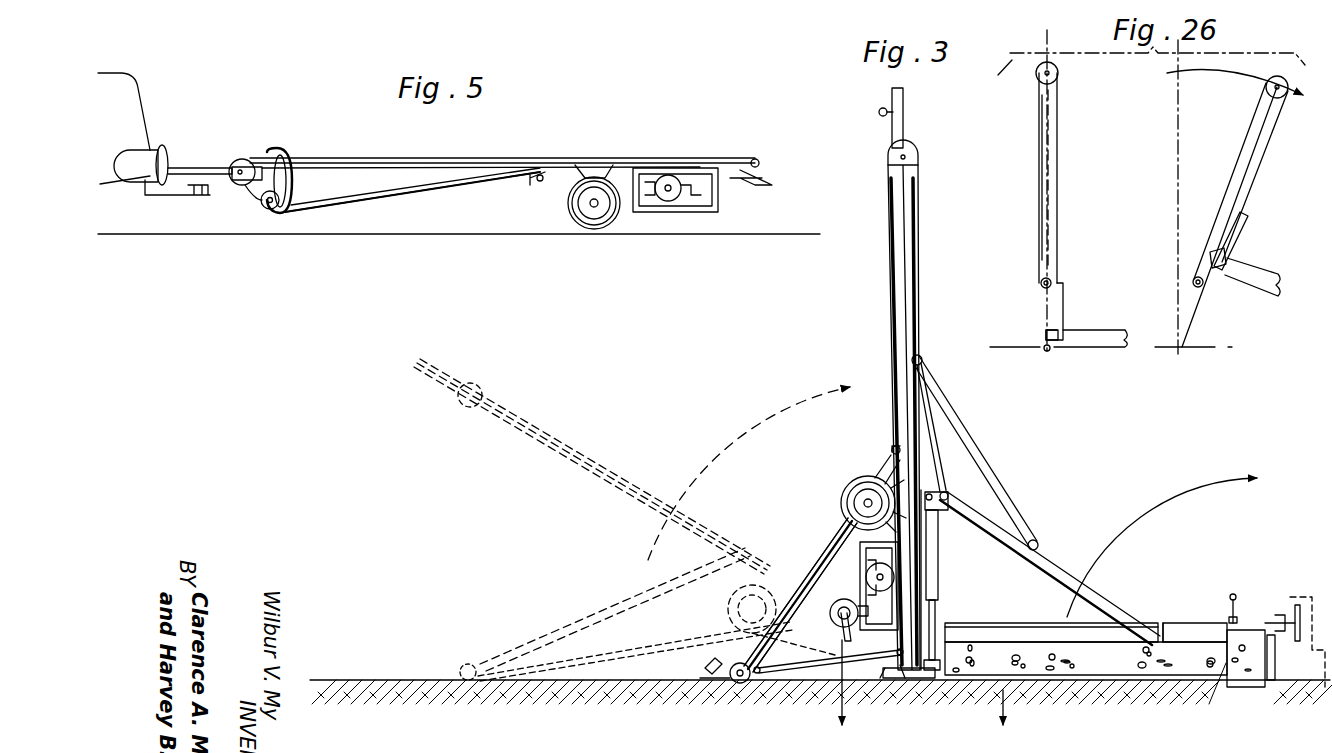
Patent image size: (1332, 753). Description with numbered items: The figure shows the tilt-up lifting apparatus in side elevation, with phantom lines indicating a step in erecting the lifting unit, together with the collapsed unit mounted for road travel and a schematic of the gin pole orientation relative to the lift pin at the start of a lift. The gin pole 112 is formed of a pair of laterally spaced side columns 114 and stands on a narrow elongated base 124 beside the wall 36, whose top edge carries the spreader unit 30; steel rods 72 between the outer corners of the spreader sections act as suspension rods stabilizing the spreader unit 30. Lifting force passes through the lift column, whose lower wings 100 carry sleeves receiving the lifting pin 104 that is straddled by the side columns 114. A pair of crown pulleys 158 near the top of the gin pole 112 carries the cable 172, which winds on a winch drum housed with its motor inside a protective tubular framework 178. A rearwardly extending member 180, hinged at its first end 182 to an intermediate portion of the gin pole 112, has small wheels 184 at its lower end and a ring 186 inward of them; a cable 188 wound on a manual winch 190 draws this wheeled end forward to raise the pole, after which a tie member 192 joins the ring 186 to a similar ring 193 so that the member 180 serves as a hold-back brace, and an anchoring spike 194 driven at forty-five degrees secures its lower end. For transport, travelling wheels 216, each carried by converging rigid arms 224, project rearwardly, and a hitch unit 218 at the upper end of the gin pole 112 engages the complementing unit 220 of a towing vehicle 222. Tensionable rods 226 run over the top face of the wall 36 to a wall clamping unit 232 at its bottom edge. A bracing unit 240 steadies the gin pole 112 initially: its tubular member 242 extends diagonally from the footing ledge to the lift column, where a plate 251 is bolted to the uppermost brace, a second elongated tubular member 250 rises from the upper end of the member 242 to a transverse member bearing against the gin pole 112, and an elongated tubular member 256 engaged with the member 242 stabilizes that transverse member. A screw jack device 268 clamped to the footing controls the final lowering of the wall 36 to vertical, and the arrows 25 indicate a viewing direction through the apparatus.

In FIG. 3, the section line arrows 25 is at (922, 696).
In FIG. 26, the spreader unit 30 is at (1076, 281).
In FIG. 3, the wall 36 is at (1080, 680).
In FIG. 26, the wall 36 is at (1106, 315).
In FIG. 3, the steel rods 72 is at (901, 563).
In FIG. 3, the wings 100 is at (922, 682).
In FIG. 26, the lifting pin 104 is at (1046, 334).
In FIG. 5, the gin pole 112 is at (478, 158).
In FIG. 3, the gin pole 112 is at (574, 466).
In FIG. 26, the side columns 114 is at (1050, 212).
In FIG. 5, the base 124 is at (746, 186).
In FIG. 5, the crown pulleys 158 is at (243, 160).
In FIG. 26, the crown pulleys 158 is at (1054, 80).
In FIG. 3, the cable 172 is at (914, 271).
In FIG. 26, the cable 172 is at (1057, 147).
In FIG. 5, the protective tubular framework 178 is at (676, 214).
In FIG. 5, the rearwardly extending member 180 is at (413, 197).
In FIG. 3, the rearwardly extending member 180 is at (813, 561).
In FIG. 3, the first end 182 is at (889, 452).
In FIG. 3, the wheels 184 is at (455, 662).
In FIG. 3, the ring 186 is at (761, 668).
In FIG. 3, the cable 188 is at (600, 655).
In FIG. 3, the manual winch 190 is at (840, 603).
In FIG. 3, the tie member 192 is at (790, 670).
In FIG. 3, the ring 193 is at (899, 658).
In FIG. 3, the anchoring spike 194 is at (702, 666).
In FIG. 5, the travelling wheels 216 is at (580, 225).
In FIG. 3, the travelling wheels 216 is at (843, 495).
In FIG. 3, the hitch unit 218 is at (878, 112).
In FIG. 5, the complementing unit 220 is at (195, 191).
In FIG. 5, the towing vehicle 222 is at (133, 123).
In FIG. 3, the converging rigid arms 224 is at (855, 522).
In FIG. 3, the tensionable rods 226 is at (1012, 625).
In FIG. 3, the wall clamping unit 232 is at (1283, 668).
In FIG. 3, the bracing unit 240 is at (1026, 481).
In FIG. 3, the tubular member 242 is at (1052, 568).
In FIG. 3, the second elongated tubular member 250 is at (942, 458).
In FIG. 3, the plate 251 is at (943, 508).
In FIG. 3, the elongated tubular member 256 is at (966, 452).
In FIG. 3, the screw jack device 268 is at (1253, 604).